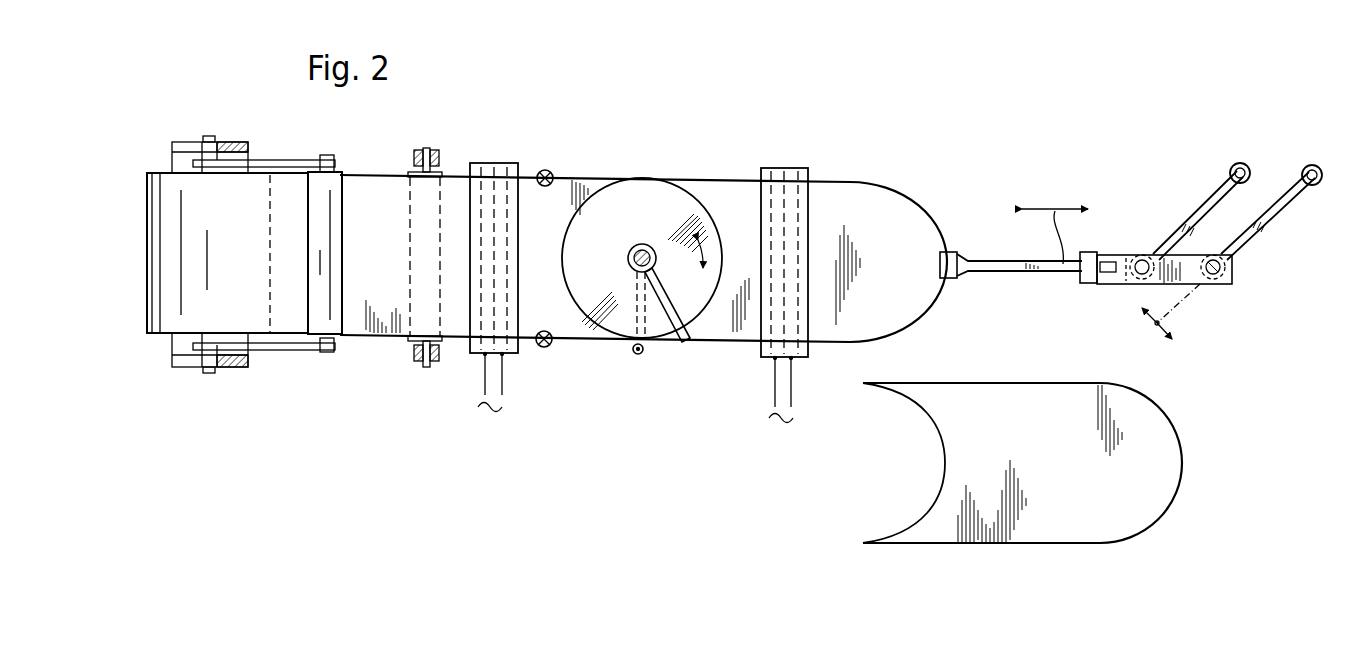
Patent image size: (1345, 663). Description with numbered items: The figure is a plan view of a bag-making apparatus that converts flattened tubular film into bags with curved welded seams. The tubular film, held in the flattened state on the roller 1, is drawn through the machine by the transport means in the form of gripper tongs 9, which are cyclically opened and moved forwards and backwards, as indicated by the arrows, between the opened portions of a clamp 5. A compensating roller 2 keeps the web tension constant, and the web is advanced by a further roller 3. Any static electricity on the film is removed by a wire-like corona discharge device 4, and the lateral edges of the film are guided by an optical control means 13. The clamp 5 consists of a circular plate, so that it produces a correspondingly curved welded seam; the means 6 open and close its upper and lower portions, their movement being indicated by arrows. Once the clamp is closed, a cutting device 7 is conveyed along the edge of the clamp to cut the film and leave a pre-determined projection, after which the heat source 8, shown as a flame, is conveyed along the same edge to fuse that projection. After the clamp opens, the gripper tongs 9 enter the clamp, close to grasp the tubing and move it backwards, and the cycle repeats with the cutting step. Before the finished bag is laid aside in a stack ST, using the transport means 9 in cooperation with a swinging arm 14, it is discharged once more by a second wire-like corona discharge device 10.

The roller 1 is at (157, 334).
The compensating roller 2 is at (342, 334).
The roller 3 is at (441, 341).
The discharge device 4 is at (491, 162).
The clamp 5 is at (638, 193).
The means for opening and closing the clamp 6 is at (629, 264).
The cutting device 7 is at (676, 302).
The heat source 8 is at (643, 355).
The gripper tongs 9 is at (1004, 268).
The discharge device 10 is at (790, 166).
The optical control means 13 is at (548, 170).
The swinging arm 14 is at (1210, 198).
The stack ST is at (1172, 461).